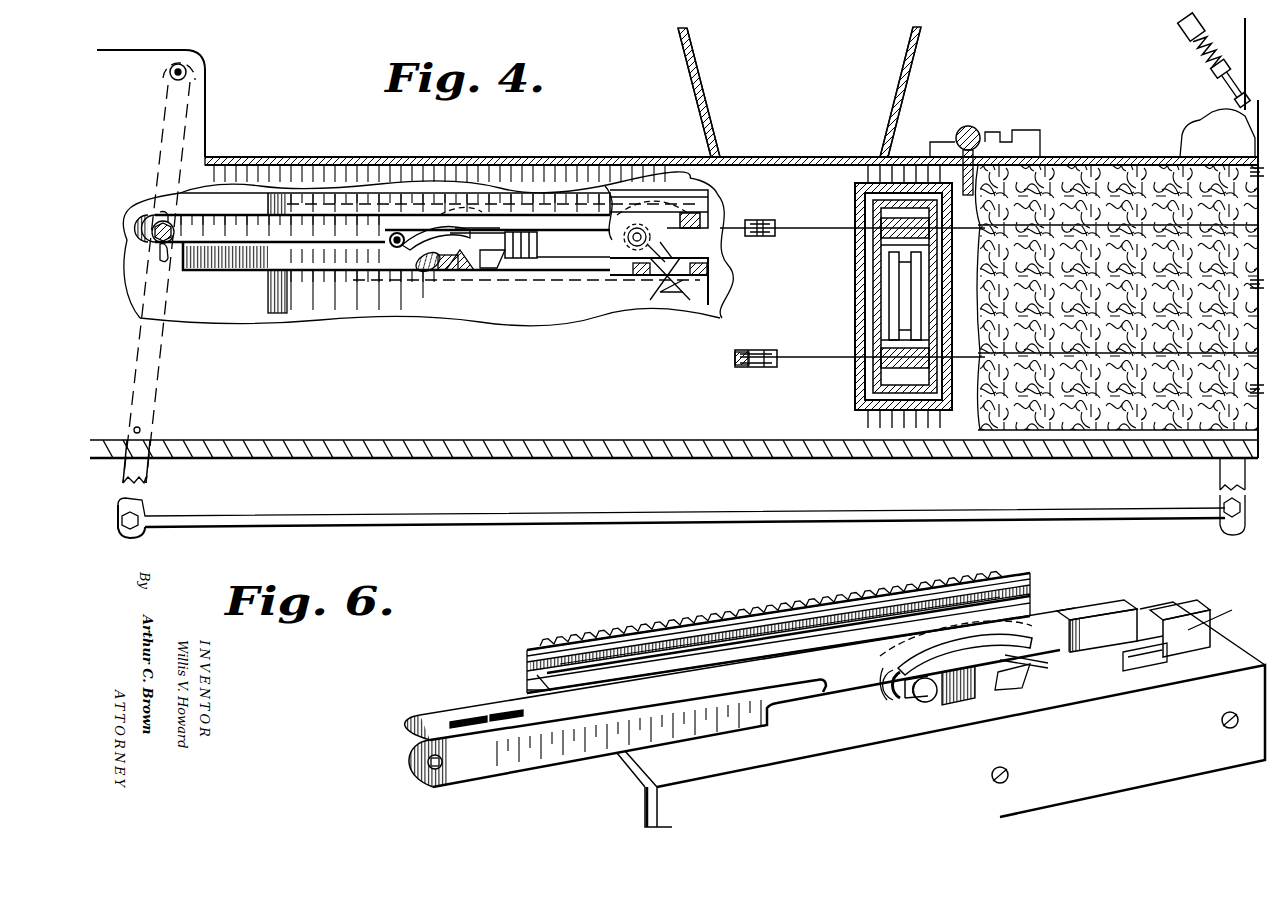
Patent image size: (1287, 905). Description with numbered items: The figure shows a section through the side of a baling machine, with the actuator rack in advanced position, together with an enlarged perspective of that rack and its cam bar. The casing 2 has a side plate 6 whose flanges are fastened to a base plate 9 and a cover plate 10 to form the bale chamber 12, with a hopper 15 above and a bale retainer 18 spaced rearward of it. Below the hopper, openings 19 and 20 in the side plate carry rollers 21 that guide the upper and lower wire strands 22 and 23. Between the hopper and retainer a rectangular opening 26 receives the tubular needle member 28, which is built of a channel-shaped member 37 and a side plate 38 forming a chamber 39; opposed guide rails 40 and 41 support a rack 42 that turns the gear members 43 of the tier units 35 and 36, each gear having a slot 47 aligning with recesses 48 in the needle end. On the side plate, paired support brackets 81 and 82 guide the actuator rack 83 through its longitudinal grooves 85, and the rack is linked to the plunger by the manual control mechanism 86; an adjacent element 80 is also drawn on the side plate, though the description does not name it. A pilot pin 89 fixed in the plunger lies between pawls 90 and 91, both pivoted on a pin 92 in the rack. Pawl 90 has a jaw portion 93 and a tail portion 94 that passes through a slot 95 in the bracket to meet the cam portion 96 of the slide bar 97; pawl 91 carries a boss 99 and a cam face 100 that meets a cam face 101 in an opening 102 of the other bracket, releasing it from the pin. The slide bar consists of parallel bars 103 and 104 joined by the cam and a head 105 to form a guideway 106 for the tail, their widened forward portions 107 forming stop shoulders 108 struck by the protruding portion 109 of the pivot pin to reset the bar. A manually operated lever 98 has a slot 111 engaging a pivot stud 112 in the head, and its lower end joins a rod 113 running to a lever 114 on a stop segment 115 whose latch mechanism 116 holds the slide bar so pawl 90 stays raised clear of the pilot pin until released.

In FIG. 4, the casing portion 2 is at (885, 157).
In FIG. 4, the side plate 6 is at (565, 326).
In FIG. 4, the base plate 9 is at (545, 440).
In FIG. 4, the cover plate 10 is at (560, 160).
In FIG. 4, the bale chamber 12 is at (965, 132).
In FIG. 4, the hopper 15 is at (688, 52).
In FIG. 4, the bale retainer 18 is at (1110, 297).
In FIG. 4, the opening 19 is at (760, 220).
In FIG. 4, the opening 20 is at (740, 368).
In FIG. 4, the roller 21 is at (755, 350).
In FIG. 4, the wire strand 22 is at (840, 230).
In FIG. 4, the wire strand 23 is at (855, 360).
In FIG. 4, the rectangular-shaped opening 26 is at (888, 285).
In FIG. 4, the tubular needle member 28 is at (930, 270).
In FIG. 4, the tier unit 35 is at (856, 190).
In FIG. 4, the tier unit 36 is at (866, 388).
In FIG. 4, the channel-shaped member 37 is at (965, 237).
In FIG. 4, the side plate 38 is at (860, 405).
In FIG. 4, the chamber 39 is at (965, 368).
In FIG. 4, the guide rail 40 is at (905, 300).
In FIG. 4, the guide rail 41 is at (965, 298).
In FIG. 4, the rack 42 is at (866, 265).
In FIG. 4, the gear member 43 is at (965, 395).
In FIG. 4, the longitudinal slot 47 is at (882, 247).
In FIG. 4, the recess 48 is at (865, 222).
In FIG. 4, the lower bar 80 is at (585, 288).
In FIG. 6, the lower bar 80 is at (603, 626).
In FIG. 4, the support bracket 81 is at (275, 195).
In FIG. 4, the support bracket 82 is at (268, 290).
In FIG. 6, the actuator rack 83 is at (722, 625).
In FIG. 6, the longitudinal groove 85 is at (660, 645).
In FIG. 4, the manual control mechanism 86 is at (692, 512).
In FIG. 4, the pilot pin 89 is at (462, 272).
In FIG. 4, the pawl 90 is at (410, 254).
In FIG. 6, the pawl 90 is at (895, 700).
In FIG. 4, the pawl 91 is at (538, 244).
In FIG. 6, the pawl 91 is at (883, 680).
In FIG. 4, the pin 92 is at (390, 238).
In FIG. 6, the pin 92 is at (912, 700).
In FIG. 4, the jaw portion 93 is at (442, 272).
In FIG. 6, the jaw portion 93 is at (960, 705).
In FIG. 4, the tail portion 94 is at (448, 225).
In FIG. 6, the tail portion 94 is at (1020, 645).
In FIG. 4, the slot 95 is at (628, 192).
In FIG. 4, the cam portion 96 is at (712, 214).
In FIG. 6, the cam portion 96 is at (1110, 612).
In FIG. 4, the slide bar 97 is at (712, 262).
In FIG. 6, the slide bar 97 is at (1185, 612).
In FIG. 4, the manually operated lever 98 is at (158, 365).
In FIG. 4, the boss 99 is at (495, 270).
In FIG. 6, the boss 99 is at (1010, 682).
In FIG. 4, the cam face 100 is at (460, 245).
In FIG. 6, the cam face 100 is at (1035, 668).
In FIG. 4, the cam face 101 is at (710, 276).
In FIG. 4, the opening 102 is at (676, 262).
In FIG. 6, the opening 102 is at (1150, 660).
In FIG. 6, the bar 103 is at (470, 718).
In FIG. 6, the bar 104 is at (520, 710).
In FIG. 4, the head 105 is at (148, 224).
In FIG. 6, the head 105 is at (412, 730).
In FIG. 6, the guideway 106 is at (470, 713).
In FIG. 4, the forward portion 107 is at (373, 257).
In FIG. 6, the forward portion 107 is at (620, 725).
In FIG. 4, the stop shoulder 108 is at (340, 300).
In FIG. 6, the stop shoulder 108 is at (768, 718).
In FIG. 4, the protruding portion 109 is at (397, 232).
In FIG. 6, the protruding portion 109 is at (928, 702).
In FIG. 4, the slot 111 is at (158, 252).
In FIG. 4, the pivot stud 112 is at (158, 280).
In FIG. 4, the rod 113 is at (345, 520).
In FIG. 4, the lever 114 is at (1185, 40).
In FIG. 4, the stop segment 115 is at (1215, 136).
In FIG. 4, the latch mechanism 116 is at (1205, 75).